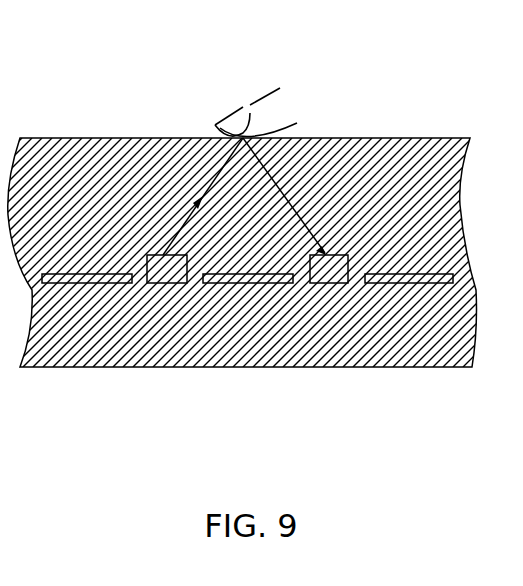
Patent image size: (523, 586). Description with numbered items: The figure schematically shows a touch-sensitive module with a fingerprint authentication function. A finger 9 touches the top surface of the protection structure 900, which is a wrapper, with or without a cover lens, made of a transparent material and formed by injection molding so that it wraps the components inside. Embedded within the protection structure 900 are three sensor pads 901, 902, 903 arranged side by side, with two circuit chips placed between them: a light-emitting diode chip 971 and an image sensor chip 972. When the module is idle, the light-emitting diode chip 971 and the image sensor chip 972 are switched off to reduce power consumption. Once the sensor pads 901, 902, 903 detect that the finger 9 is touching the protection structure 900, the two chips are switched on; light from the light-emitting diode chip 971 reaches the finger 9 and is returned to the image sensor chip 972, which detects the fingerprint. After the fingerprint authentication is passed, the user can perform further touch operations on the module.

The finger 9 is at (263, 92).
The protection structure 900 is at (400, 150).
The sensor pad 901 is at (82, 283).
The sensor pad 902 is at (252, 283).
The sensor pad 903 is at (417, 283).
The light-emitting diode chip 971 is at (165, 283).
The image sensor chip 972 is at (330, 283).